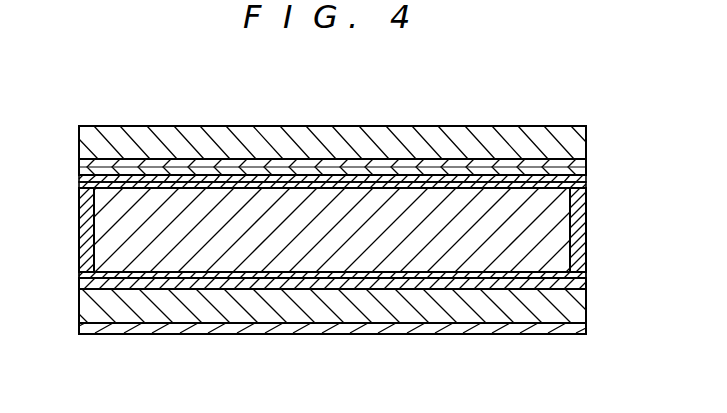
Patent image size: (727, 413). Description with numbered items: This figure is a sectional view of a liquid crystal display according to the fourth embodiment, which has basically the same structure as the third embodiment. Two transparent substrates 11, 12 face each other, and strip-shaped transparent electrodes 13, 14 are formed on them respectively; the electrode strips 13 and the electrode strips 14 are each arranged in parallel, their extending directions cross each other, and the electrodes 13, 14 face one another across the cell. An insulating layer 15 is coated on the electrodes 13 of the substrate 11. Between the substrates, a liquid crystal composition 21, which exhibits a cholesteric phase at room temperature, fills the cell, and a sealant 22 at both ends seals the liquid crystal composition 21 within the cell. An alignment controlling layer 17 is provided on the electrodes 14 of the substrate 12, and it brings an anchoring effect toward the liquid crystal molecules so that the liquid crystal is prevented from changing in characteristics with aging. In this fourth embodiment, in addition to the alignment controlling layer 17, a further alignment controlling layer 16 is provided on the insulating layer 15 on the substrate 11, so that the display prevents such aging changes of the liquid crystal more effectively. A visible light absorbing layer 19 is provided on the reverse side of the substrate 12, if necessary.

The transparent substrate 11 is at (443, 123).
The transparent substrate 12 is at (411, 318).
The transparent electrodes 13 is at (385, 162).
The transparent electrodes 14 is at (337, 283).
The insulating layer 15 is at (317, 175).
The alignment controlling layer 16 is at (168, 187).
The alignment controlling layer 17 is at (263, 275).
The visible light absorbing layer 19 is at (150, 328).
The liquid crystal composition 21 is at (240, 197).
The sealant 22 is at (78, 213).